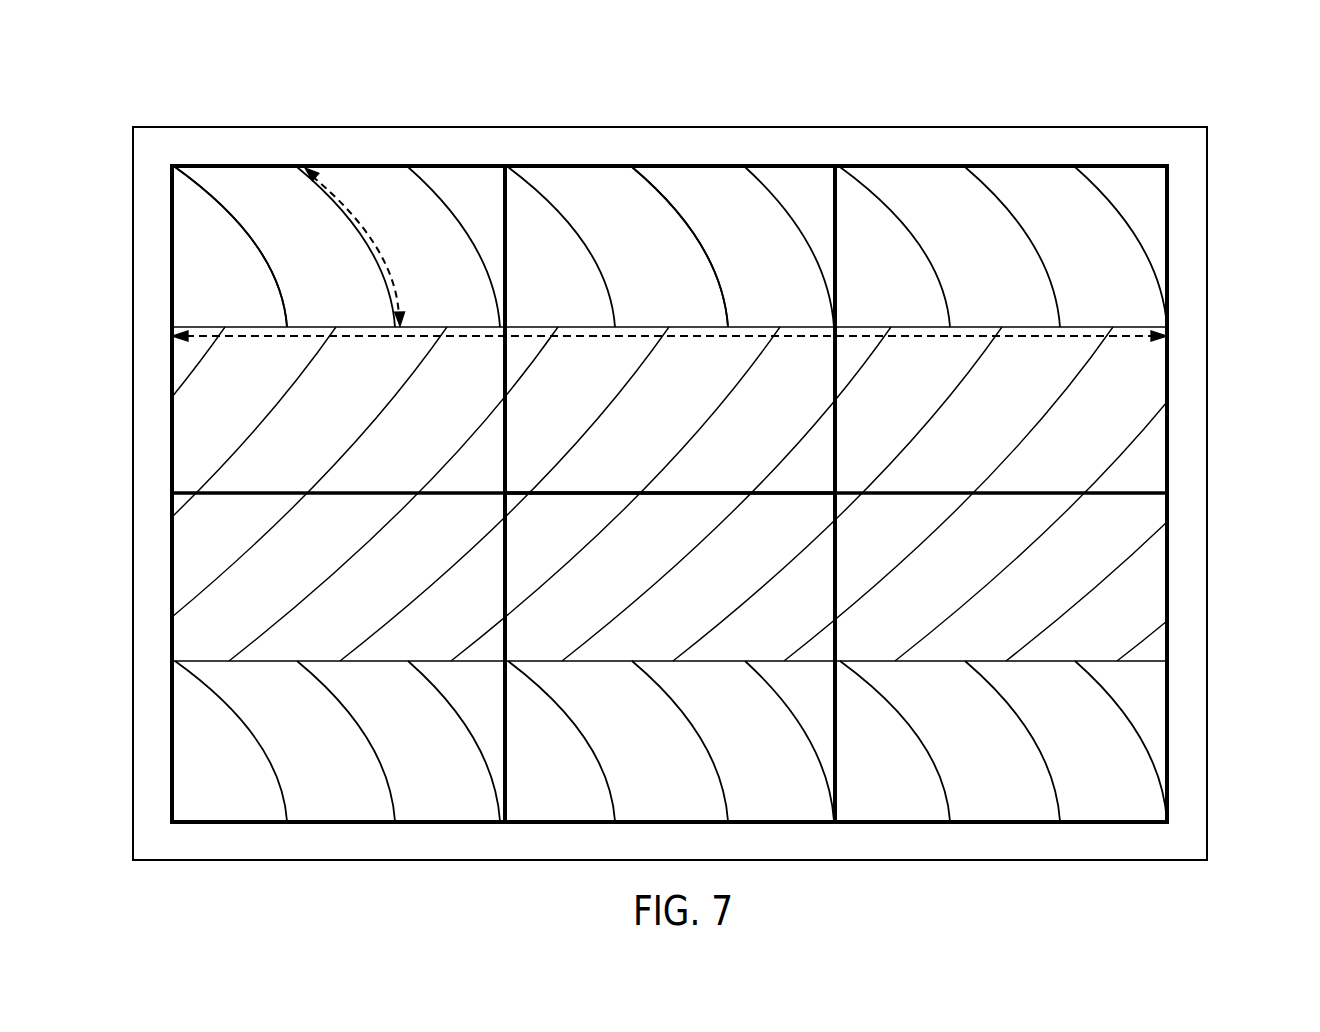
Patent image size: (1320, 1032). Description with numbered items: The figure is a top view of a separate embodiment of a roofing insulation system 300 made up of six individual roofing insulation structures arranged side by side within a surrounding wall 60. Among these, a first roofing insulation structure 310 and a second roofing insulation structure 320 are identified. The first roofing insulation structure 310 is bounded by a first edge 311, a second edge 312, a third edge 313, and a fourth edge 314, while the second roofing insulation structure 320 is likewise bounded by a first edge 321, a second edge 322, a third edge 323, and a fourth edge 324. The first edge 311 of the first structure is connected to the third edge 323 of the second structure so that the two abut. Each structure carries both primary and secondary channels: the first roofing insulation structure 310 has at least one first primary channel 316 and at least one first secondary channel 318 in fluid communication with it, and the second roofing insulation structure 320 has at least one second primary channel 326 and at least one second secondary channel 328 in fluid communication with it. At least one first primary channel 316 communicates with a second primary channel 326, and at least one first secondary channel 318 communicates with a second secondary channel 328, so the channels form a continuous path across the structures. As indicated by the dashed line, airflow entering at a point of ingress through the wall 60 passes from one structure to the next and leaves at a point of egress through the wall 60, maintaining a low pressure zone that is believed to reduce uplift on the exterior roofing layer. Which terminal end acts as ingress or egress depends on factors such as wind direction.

The wall 60 is at (152, 453).
The roofing insulation system 300 is at (1128, 93).
The first roofing insulation structure 310 is at (375, 188).
The first edge 311 is at (498, 185).
The second edge 312 is at (232, 165).
The third edge 313 is at (168, 285).
The fourth edge 314 is at (283, 492).
The first primary channel 316 is at (407, 325).
The first secondary channel 318 is at (350, 218).
The second roofing insulation structure 320 is at (705, 190).
The first edge 321 is at (832, 190).
The second edge 322 is at (567, 165).
The third edge 323 is at (508, 292).
The fourth edge 324 is at (608, 492).
The second primary channel 326 is at (638, 323).
The second secondary channel 328 is at (803, 237).